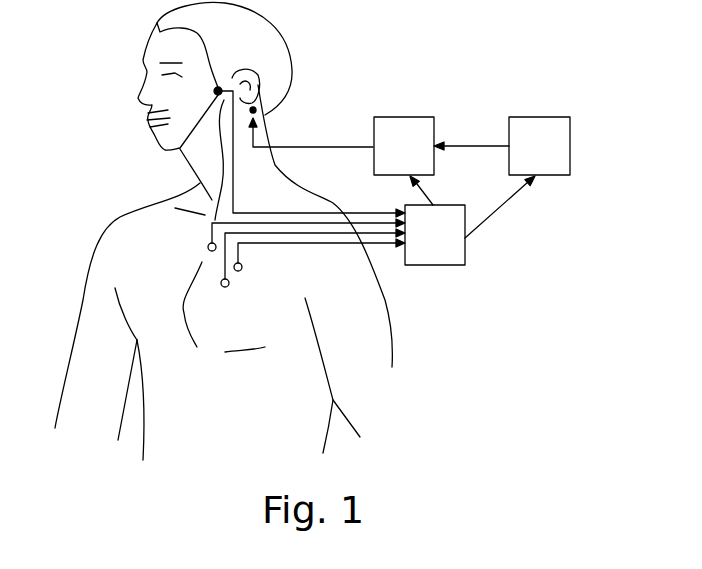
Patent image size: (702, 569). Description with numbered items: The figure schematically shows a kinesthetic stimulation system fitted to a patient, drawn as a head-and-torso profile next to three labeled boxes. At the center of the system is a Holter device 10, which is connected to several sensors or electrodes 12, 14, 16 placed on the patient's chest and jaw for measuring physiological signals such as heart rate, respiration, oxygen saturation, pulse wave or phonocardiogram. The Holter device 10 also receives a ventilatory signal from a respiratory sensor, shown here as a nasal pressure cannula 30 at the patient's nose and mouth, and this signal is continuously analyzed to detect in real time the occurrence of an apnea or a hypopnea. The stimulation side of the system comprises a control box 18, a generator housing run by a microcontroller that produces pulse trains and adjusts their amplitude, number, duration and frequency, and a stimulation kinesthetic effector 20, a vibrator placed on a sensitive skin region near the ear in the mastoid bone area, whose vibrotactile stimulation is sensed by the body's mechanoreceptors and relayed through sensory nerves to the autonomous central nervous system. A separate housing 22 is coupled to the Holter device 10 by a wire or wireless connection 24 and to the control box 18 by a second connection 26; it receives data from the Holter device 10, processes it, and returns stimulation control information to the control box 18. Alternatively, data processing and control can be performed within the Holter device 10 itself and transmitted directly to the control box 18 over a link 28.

The Holter device 10 is at (440, 267).
The electrode 12 is at (207, 247).
The electrode 14 is at (230, 284).
The electrode 16 is at (243, 267).
The control box 18 is at (400, 133).
The stimulation kinesthetic effector 20 is at (260, 108).
The housing 22 is at (542, 133).
The connection 24 is at (503, 210).
The connection 26 is at (470, 143).
The link 28 is at (422, 192).
The nasal pressure cannula 30 is at (152, 117).